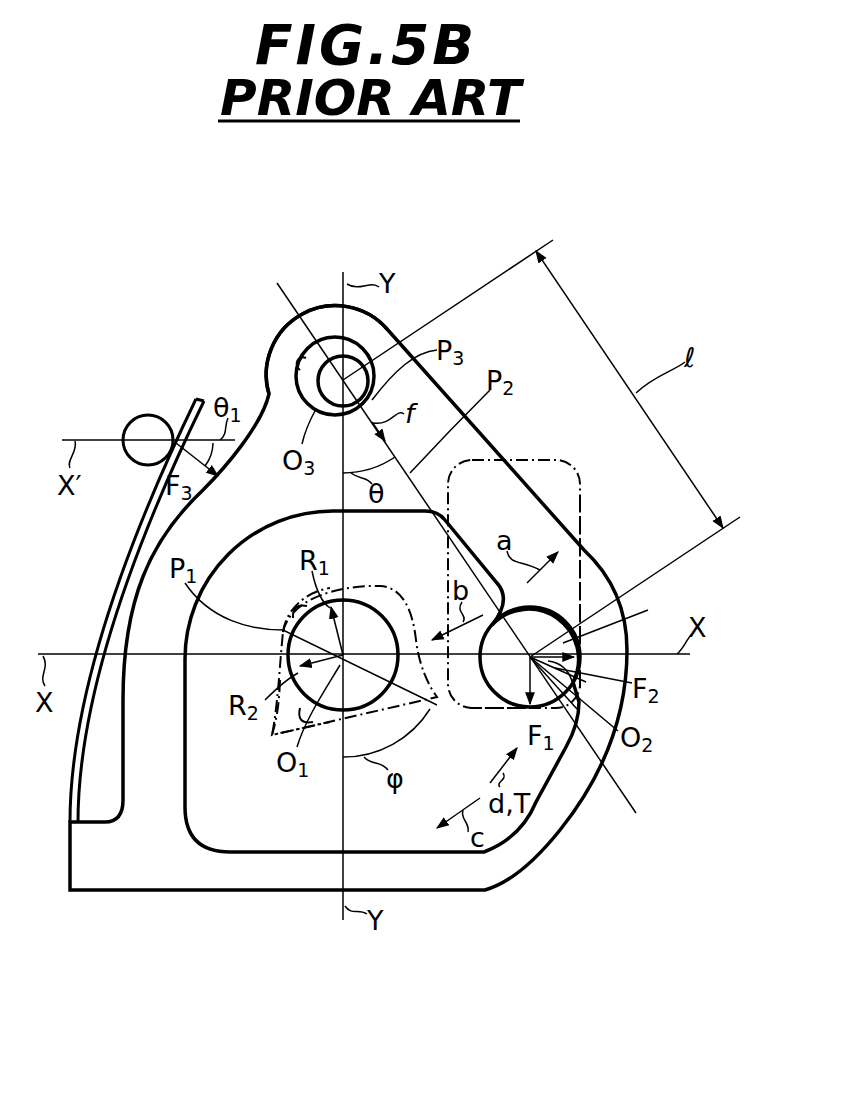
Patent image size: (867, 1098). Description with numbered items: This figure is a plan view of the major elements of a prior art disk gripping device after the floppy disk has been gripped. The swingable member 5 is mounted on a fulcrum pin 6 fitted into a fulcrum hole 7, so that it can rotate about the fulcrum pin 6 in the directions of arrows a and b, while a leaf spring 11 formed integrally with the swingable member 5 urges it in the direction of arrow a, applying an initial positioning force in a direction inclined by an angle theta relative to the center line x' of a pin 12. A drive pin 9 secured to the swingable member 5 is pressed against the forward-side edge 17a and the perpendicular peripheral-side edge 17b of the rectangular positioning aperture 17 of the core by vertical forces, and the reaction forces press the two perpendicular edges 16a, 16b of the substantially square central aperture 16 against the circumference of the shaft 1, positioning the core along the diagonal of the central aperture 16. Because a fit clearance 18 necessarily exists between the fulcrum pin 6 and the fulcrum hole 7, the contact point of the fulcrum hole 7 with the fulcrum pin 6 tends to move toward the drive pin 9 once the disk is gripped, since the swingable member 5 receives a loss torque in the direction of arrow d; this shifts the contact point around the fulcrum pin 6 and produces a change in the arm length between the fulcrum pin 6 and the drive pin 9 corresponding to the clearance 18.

The shaft 1 is at (338, 702).
The swingable member 5 is at (473, 447).
The fulcrum pin 6 is at (336, 365).
The fulcrum hole 7 is at (300, 360).
The drive pin 9 is at (573, 651).
The leaf spring 11 is at (137, 527).
The pin 12 is at (148, 415).
The central aperture 16 is at (391, 600).
The edge of central aperture 16a is at (297, 610).
The edge of central aperture 16b is at (285, 731).
The positioning aperture 17 is at (567, 500).
The forward-side edge 17a is at (497, 708).
The peripheral-side edge 17b is at (570, 560).
The fit clearance 18 is at (303, 353).